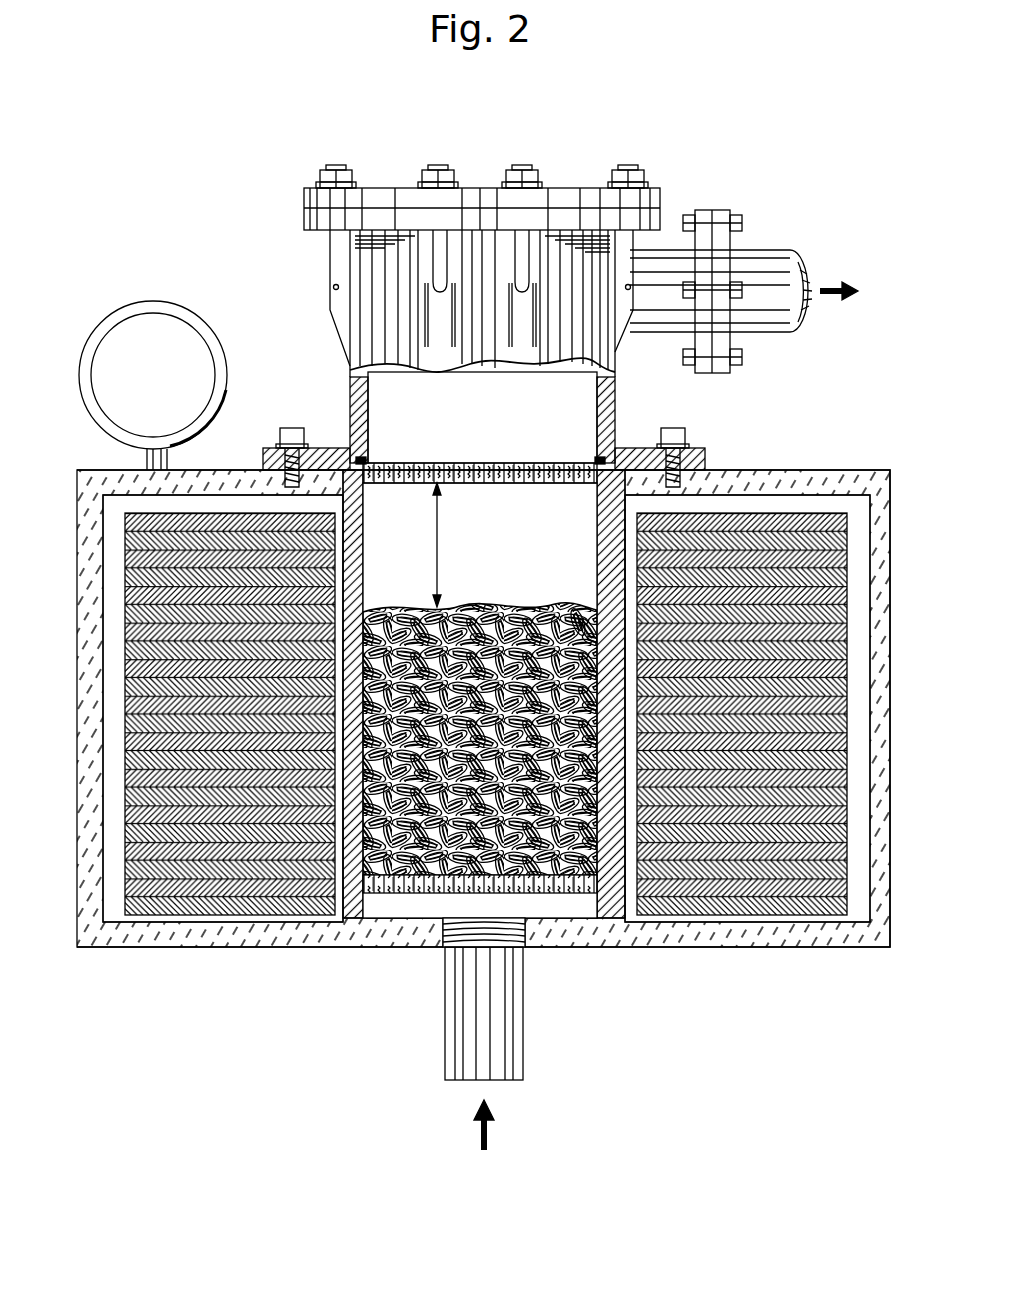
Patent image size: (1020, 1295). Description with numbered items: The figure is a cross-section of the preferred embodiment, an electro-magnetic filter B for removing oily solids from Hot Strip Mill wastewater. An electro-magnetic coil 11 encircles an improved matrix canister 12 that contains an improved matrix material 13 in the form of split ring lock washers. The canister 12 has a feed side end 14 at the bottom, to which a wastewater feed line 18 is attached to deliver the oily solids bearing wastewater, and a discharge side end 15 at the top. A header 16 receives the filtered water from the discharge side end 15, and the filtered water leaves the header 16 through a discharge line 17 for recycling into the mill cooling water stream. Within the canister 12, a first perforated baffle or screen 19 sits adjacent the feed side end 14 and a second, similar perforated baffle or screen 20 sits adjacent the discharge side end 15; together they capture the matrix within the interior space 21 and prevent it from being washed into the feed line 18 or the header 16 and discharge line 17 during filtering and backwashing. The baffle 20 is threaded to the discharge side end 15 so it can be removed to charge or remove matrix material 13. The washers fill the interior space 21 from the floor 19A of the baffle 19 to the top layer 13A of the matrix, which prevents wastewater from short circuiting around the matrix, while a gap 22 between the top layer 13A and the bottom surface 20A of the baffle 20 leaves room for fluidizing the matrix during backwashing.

The electro-magnetic filter B is at (240, 218).
The electro-magnetic coil 11 is at (752, 893).
The matrix canister 12 is at (383, 947).
The matrix material 13 is at (512, 612).
The top layer of the matrix 13A is at (576, 617).
The feed side end 14 is at (403, 948).
The discharge side end 15 is at (525, 462).
The header 16 is at (372, 348).
The discharge line 17 is at (768, 322).
The wastewater feed line 18 is at (505, 1060).
The first perforated baffle or screen 19 is at (527, 895).
The floor of baffle 19A is at (560, 885).
The second perforated baffle or screen 20 is at (445, 480).
The bottom surface of the discharge side baffle 20A is at (520, 484).
The interior space 21 is at (412, 553).
The gap 22 is at (440, 577).